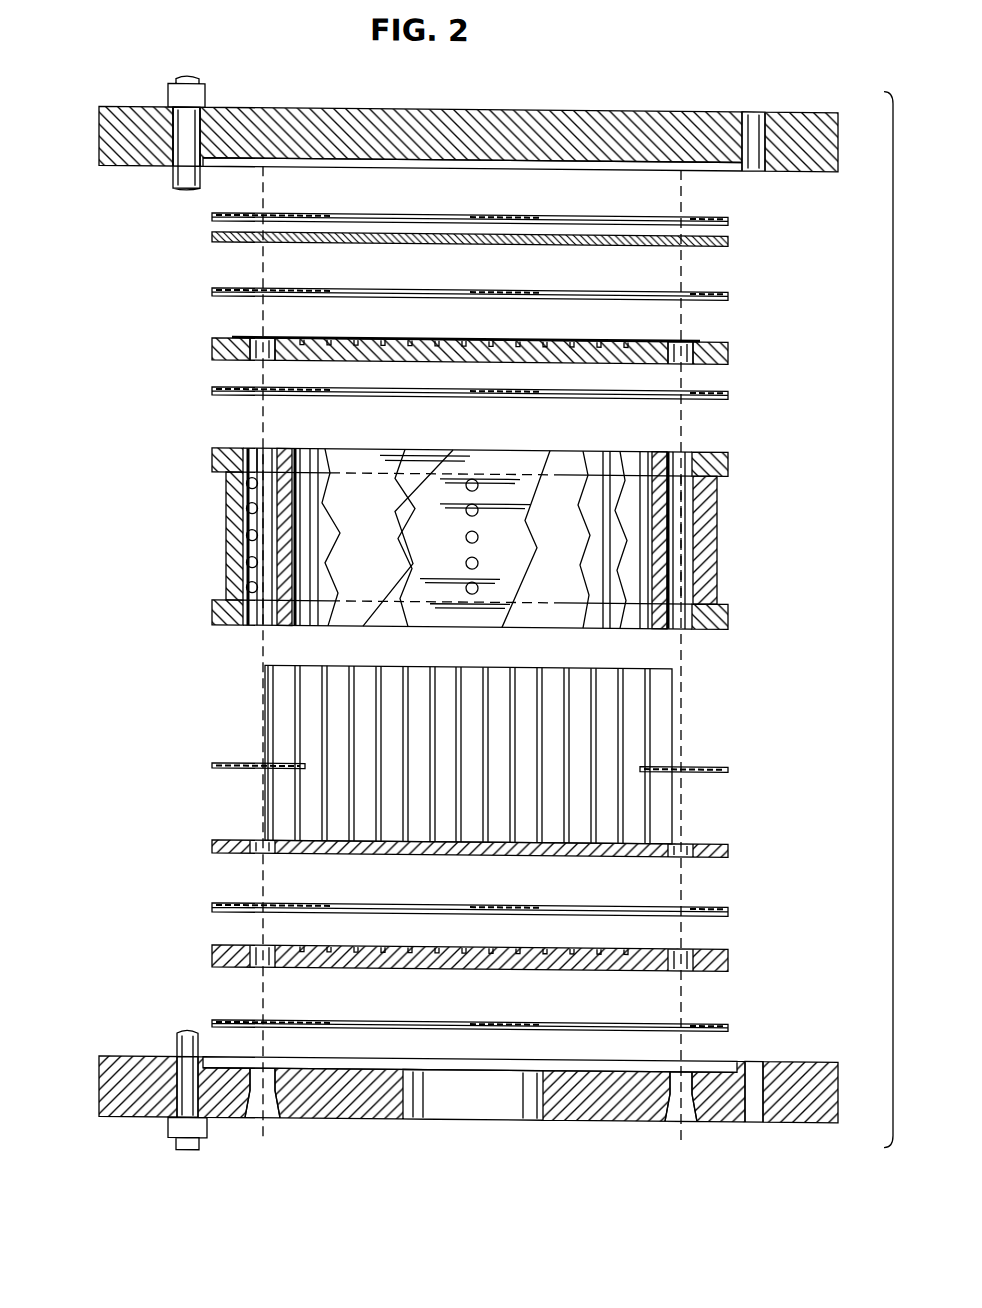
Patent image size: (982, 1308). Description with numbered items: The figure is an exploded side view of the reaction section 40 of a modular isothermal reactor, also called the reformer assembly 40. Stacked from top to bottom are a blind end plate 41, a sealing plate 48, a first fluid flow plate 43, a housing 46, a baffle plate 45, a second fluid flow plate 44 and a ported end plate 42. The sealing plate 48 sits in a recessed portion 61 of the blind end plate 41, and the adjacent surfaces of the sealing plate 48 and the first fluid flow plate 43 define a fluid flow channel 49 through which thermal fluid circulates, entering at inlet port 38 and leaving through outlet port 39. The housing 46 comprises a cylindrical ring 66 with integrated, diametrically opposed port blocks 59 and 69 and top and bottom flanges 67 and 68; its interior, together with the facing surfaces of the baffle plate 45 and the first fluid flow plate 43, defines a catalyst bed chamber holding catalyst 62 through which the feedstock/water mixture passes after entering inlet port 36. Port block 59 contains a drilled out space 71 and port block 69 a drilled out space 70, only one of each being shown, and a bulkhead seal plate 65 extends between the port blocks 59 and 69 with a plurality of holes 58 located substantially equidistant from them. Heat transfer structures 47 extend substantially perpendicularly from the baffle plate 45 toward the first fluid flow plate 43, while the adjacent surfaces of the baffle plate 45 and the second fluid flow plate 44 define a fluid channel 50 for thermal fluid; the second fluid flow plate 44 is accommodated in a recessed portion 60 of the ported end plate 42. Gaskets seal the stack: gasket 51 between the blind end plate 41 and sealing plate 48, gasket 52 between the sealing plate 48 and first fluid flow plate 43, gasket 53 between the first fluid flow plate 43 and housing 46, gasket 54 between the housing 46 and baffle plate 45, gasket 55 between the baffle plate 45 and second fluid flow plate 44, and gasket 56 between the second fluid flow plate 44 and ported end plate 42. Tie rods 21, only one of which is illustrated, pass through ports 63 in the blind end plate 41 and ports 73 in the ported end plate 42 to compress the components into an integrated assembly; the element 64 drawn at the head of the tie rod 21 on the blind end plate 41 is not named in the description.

The tie rod 21 is at (140, 122).
The inlet port 36 is at (262, 443).
The inlet port 38 is at (256, 356).
The outlet port 39 is at (683, 357).
The reaction section 40 is at (493, 542).
The blind end plate 41 is at (798, 158).
The ported end plate 42 is at (825, 1055).
The first fluid flow plate 43 is at (730, 346).
The second fluid flow plate 44 is at (212, 961).
The baffle plate 45 is at (730, 839).
The housing 46 is at (700, 550).
The heat transfer structures 47 is at (650, 732).
The sealing plate 48 is at (730, 235).
The fluid flow channel 49 is at (372, 335).
The fluid channel 50 is at (388, 940).
The gasket 51 is at (212, 215).
The gasket 52 is at (212, 290).
The gasket 53 is at (212, 390).
The gasket 54 is at (730, 762).
The gasket 55 is at (730, 902).
The gasket 56 is at (730, 1014).
The holes 58 is at (478, 502).
The port block 59 is at (248, 518).
The recessed portion 60 is at (712, 1063).
The recessed portion 61 is at (716, 160).
The catalyst 62 is at (741, 127).
The ports 63 is at (208, 116).
The bolt head 64 is at (205, 91).
The bulkhead seal plate 65 is at (430, 544).
The cylindrical ring 66 is at (226, 488).
The top flange 67 is at (212, 453).
The bottom flange 68 is at (225, 622).
The port block 69 is at (703, 515).
The drilled out space 70 is at (684, 576).
The drilled out space 71 is at (263, 627).
The ports 73 is at (204, 1108).